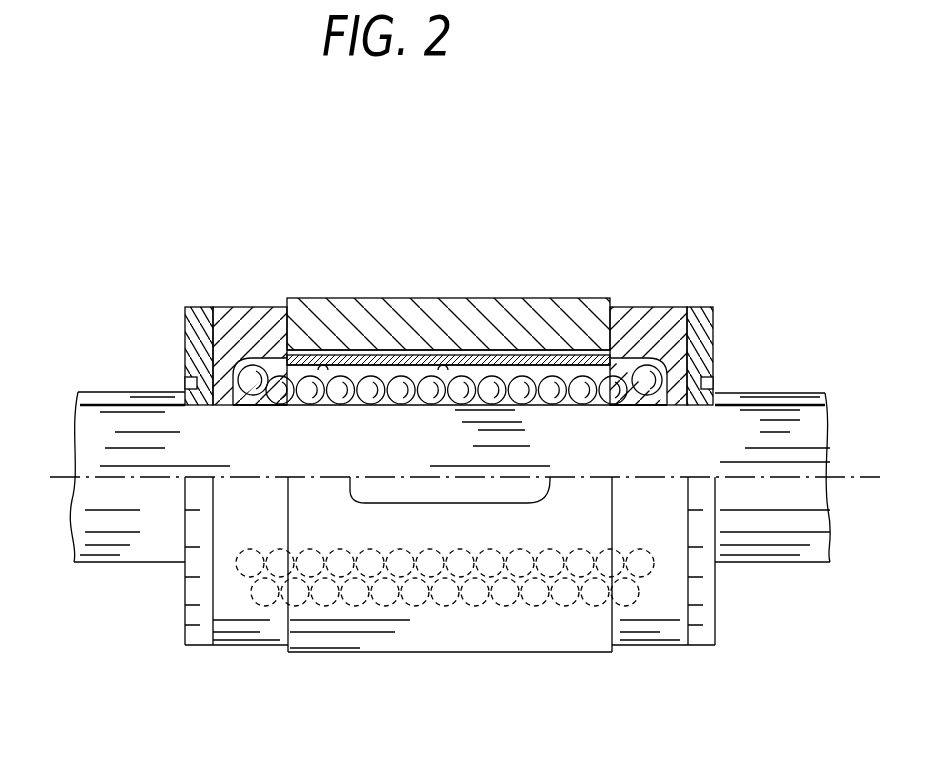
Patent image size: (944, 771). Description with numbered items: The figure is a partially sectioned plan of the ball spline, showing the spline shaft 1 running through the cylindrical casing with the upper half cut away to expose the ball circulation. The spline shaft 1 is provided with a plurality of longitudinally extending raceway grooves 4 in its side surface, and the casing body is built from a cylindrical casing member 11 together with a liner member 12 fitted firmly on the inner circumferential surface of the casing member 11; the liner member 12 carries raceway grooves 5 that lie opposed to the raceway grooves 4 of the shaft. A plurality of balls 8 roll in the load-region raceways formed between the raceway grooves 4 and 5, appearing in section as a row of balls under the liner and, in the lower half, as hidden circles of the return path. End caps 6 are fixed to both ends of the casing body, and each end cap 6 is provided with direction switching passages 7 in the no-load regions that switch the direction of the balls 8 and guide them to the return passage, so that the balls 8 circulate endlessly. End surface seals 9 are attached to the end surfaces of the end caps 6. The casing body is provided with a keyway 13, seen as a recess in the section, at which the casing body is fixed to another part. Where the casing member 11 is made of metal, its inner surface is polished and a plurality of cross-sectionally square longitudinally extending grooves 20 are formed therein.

The spline shaft 1 is at (797, 522).
The raceway grooves 4 is at (110, 400).
The raceway grooves 5 is at (312, 347).
The end caps 6 is at (242, 320).
The direction switching passages 7 is at (208, 318).
The balls 8 is at (402, 395).
The end surface seals 9 is at (190, 385).
The cylindrical casing member 11 is at (545, 305).
The liner member 12 is at (380, 355).
The keyway 13 is at (510, 495).
The longitudinally extending grooves 20 is at (445, 352).